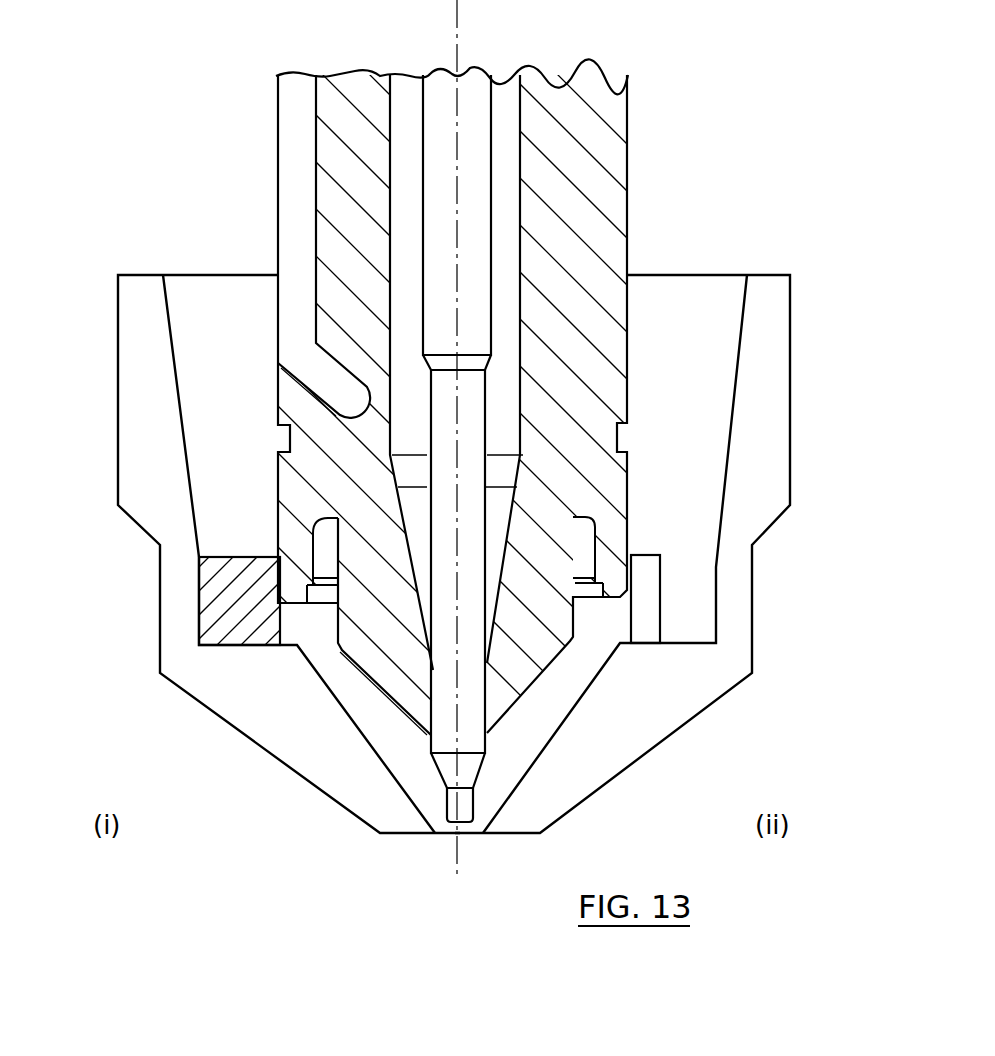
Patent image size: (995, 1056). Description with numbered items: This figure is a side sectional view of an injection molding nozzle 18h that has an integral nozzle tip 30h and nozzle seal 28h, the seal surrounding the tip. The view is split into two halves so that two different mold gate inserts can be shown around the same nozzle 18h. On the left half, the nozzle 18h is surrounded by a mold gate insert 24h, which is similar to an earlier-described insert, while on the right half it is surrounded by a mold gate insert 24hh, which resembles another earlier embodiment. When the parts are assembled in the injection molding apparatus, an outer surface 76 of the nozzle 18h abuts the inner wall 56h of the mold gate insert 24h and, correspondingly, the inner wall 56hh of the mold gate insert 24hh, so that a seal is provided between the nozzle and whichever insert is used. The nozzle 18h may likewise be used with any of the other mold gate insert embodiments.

The nozzle 18h is at (588, 237).
The mold gate insert 24h is at (163, 502).
The mold gate insert 24hh is at (755, 412).
The nozzle seal 28h is at (308, 514).
The nozzle tip 30h is at (525, 670).
The inner wall 56h is at (280, 622).
The inner wall 56hh is at (627, 600).
The outer surface 76 is at (640, 523).